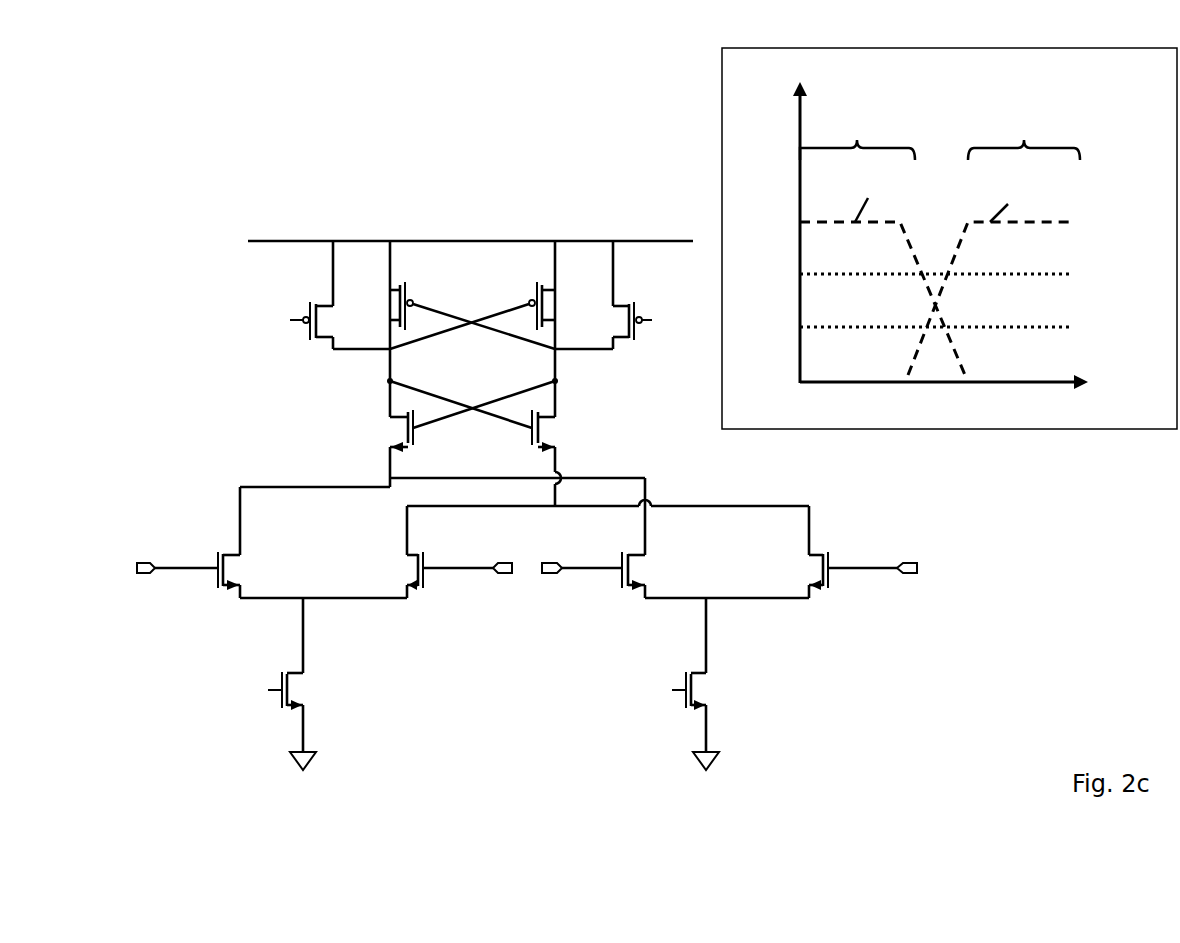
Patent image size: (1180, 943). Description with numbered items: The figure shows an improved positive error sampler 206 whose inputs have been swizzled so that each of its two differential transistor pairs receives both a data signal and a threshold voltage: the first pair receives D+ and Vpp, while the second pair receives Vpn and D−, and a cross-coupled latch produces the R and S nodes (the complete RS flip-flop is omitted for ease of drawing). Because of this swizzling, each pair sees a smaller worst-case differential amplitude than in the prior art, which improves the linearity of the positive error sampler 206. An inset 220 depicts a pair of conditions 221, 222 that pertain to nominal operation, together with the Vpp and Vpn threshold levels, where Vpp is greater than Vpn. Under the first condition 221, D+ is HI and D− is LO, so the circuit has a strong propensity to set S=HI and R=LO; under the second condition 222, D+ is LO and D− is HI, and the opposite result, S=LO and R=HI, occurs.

The positive error sampler 206 is at (548, 772).
The inset 220 is at (1167, 87).
The first condition 221 is at (857, 158).
The second condition 222 is at (1024, 159).